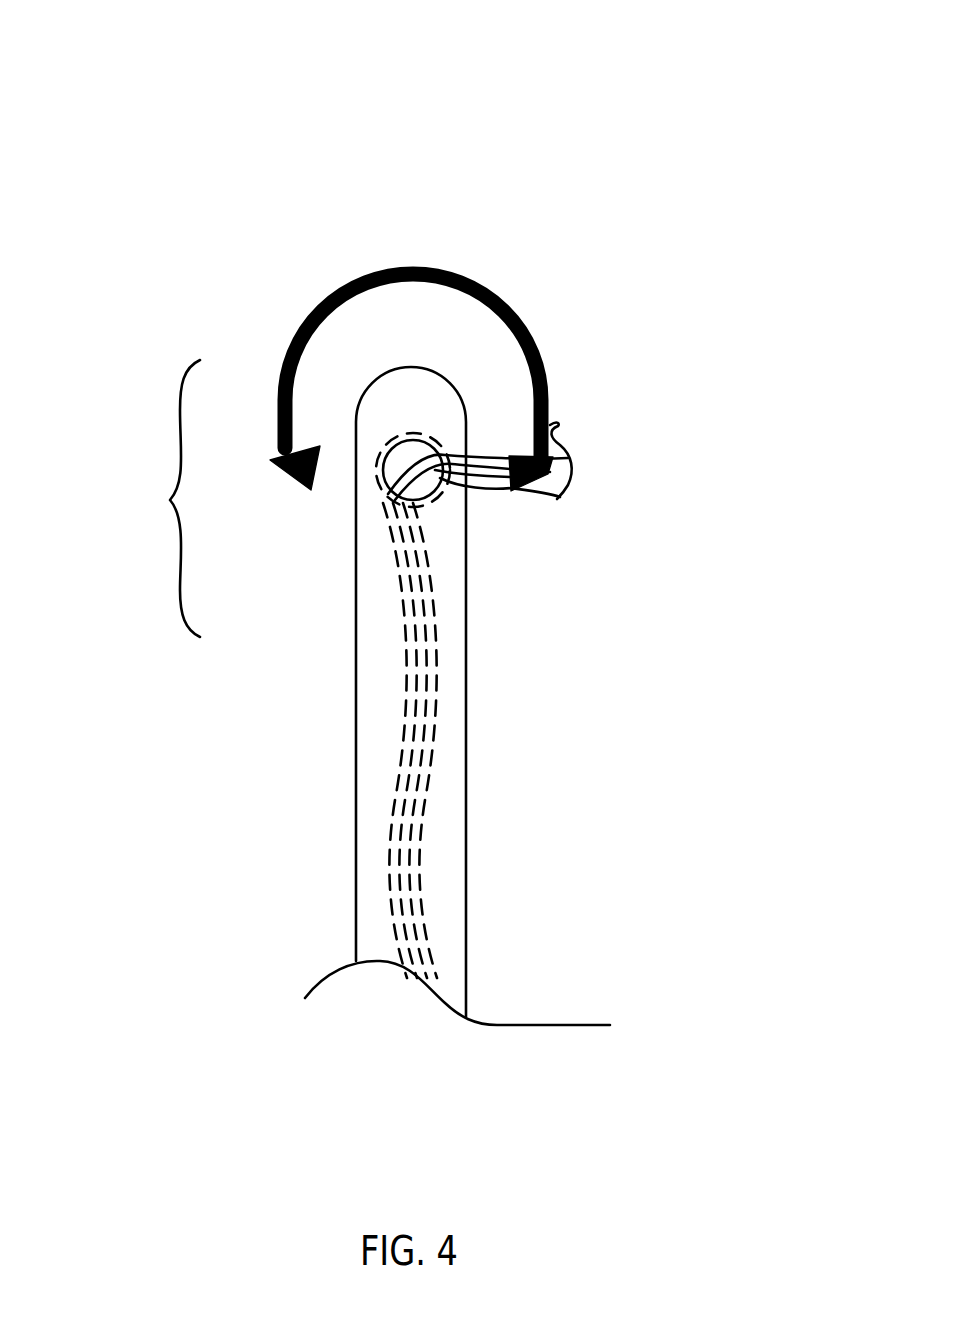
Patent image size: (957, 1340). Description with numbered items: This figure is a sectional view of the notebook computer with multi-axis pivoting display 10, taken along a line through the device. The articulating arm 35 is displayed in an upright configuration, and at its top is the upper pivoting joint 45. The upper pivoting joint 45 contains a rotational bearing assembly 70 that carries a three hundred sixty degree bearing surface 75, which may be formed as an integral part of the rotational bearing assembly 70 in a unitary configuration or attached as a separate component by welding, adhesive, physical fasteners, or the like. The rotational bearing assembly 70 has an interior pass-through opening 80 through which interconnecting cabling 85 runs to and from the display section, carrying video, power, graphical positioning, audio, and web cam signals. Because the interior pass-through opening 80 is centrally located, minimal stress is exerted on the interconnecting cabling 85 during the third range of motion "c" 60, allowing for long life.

The notebook computer with multi-axis pivoting display 10 is at (216, 179).
The articulating arm 35 is at (387, 688).
The upper pivoting joint 45 is at (170, 500).
The third range of motion "c" 60 is at (457, 270).
The rotational bearing assembly 70 is at (387, 497).
The bearing surface 75 is at (403, 440).
The interior pass-through opening 80 is at (427, 482).
The interconnecting cabling 85 is at (560, 423).